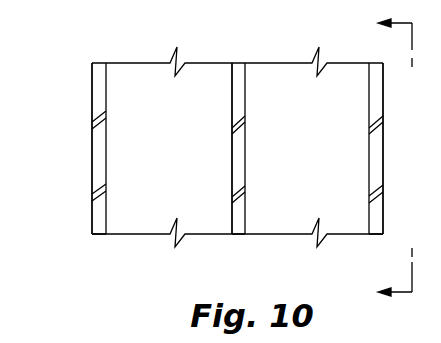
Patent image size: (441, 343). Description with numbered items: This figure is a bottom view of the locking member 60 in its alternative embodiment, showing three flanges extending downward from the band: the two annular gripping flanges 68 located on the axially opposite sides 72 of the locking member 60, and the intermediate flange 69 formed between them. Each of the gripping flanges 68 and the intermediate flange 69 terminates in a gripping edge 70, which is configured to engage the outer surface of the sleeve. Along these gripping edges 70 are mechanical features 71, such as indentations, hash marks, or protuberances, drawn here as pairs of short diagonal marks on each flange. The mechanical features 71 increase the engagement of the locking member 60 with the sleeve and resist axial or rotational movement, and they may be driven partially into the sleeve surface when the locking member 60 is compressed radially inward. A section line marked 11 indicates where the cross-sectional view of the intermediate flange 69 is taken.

The locking member 60 is at (204, 235).
The gripping flanges 68 is at (92, 94).
The intermediate flange 69 is at (232, 80).
The gripping edge 70 is at (91, 234).
The mechanical features 71 is at (92, 122).
The axially opposite sides 72 is at (92, 98).
The section line 11- 11 is at (378, 158).